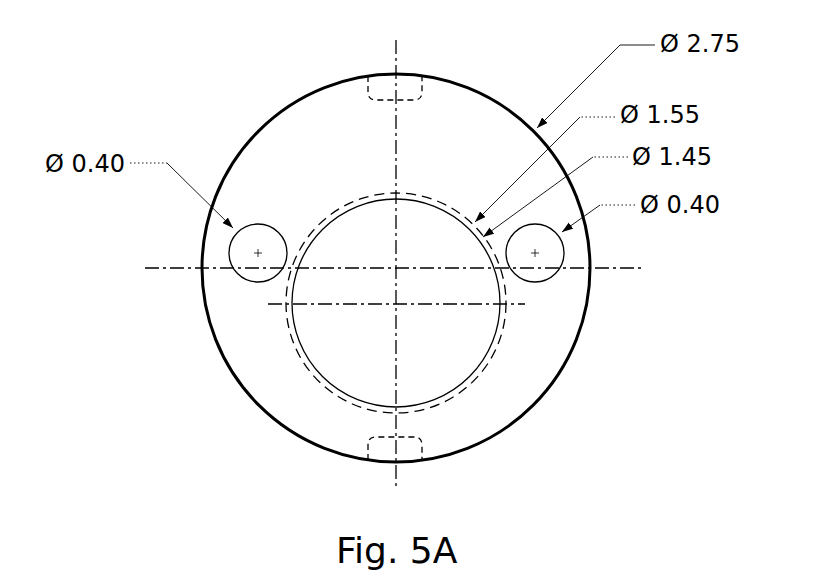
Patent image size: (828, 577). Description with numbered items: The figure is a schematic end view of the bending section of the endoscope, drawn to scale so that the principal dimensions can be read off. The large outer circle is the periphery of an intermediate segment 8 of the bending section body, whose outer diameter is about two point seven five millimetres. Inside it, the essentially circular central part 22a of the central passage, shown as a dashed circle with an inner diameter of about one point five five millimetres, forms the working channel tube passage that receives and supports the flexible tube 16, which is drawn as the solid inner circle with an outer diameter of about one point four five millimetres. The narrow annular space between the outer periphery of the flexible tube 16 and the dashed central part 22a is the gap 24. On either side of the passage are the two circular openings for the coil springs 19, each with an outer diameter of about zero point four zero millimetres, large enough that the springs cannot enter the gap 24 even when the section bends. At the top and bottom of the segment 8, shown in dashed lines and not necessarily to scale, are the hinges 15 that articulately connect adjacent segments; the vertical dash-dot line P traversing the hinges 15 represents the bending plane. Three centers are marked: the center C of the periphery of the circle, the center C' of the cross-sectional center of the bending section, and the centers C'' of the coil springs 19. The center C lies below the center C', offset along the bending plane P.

The intermediate segment 8 is at (217, 344).
The hinge member 15 is at (372, 83).
The flexible tube 16 is at (297, 340).
The coil spring 19 is at (230, 243).
The gap 24 is at (323, 383).
The essentially circular central part 22a is at (352, 405).
The bending plane P is at (396, 60).
The center of the periphery of the circle C is at (505, 358).
The center of the cross-sectional center of the bending section C' is at (510, 323).
The center of the coil spring C'' is at (182, 283).